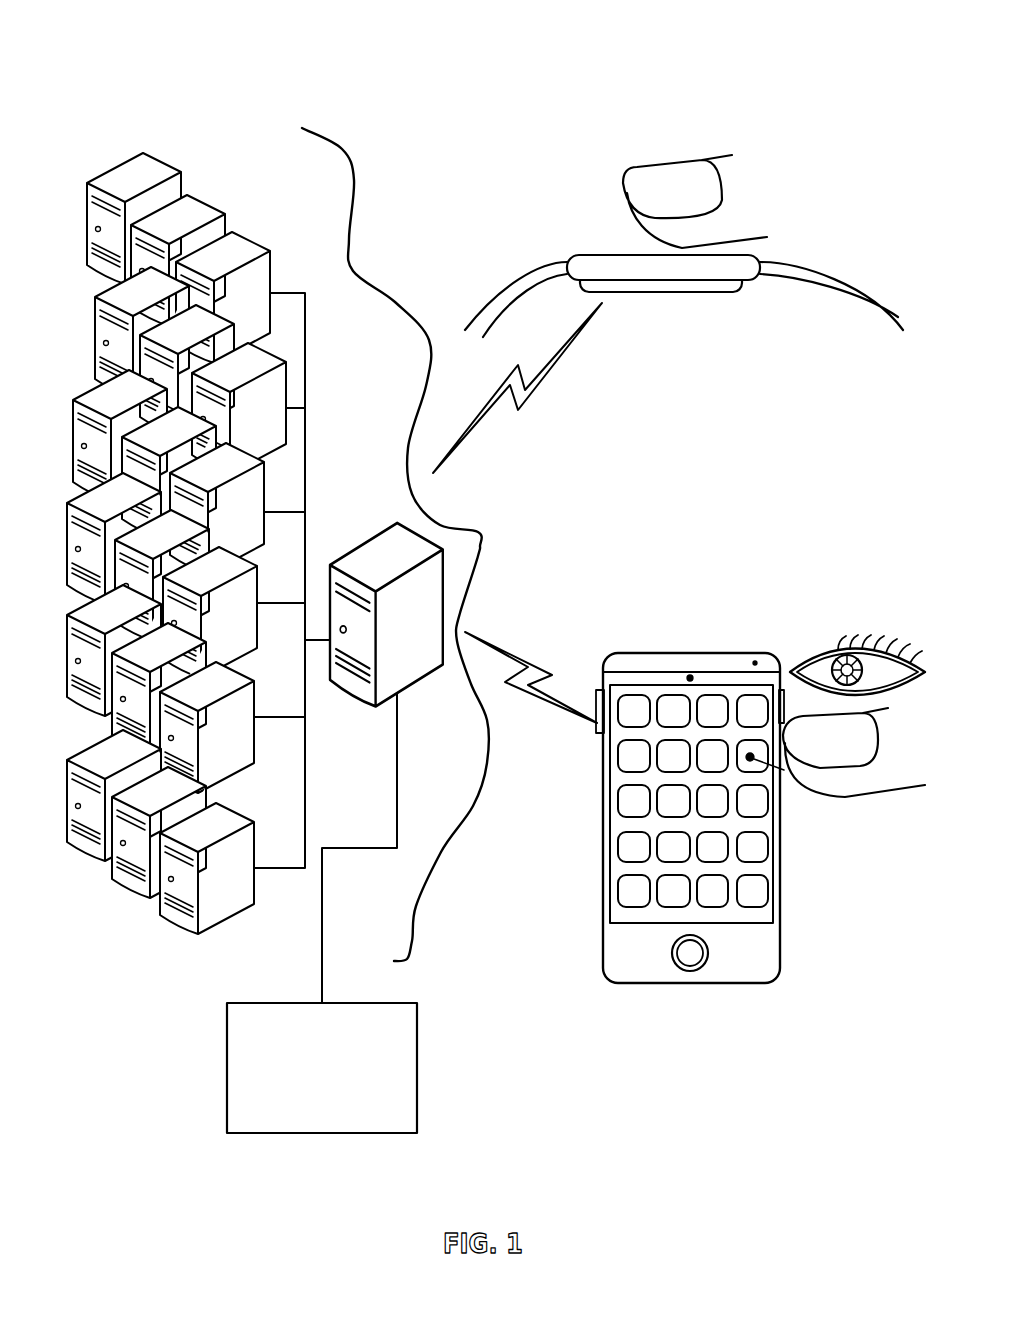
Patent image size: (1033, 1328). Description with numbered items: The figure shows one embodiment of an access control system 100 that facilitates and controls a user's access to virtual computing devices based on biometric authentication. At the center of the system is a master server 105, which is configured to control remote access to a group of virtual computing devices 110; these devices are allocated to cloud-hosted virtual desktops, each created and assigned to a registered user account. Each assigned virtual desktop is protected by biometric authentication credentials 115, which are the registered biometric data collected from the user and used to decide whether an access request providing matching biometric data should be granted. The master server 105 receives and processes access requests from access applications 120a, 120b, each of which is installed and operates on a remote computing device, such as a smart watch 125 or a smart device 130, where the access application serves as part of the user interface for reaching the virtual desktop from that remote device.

The access control system 100 is at (482, 105).
The master server 105 is at (383, 548).
The virtual computing devices 110 is at (47, 145).
The biometric authentication credentials 115 is at (322, 1068).
The access application 120a is at (722, 283).
The access application 120b is at (783, 863).
The smart watch 125 is at (797, 216).
The smart device 130 is at (741, 627).